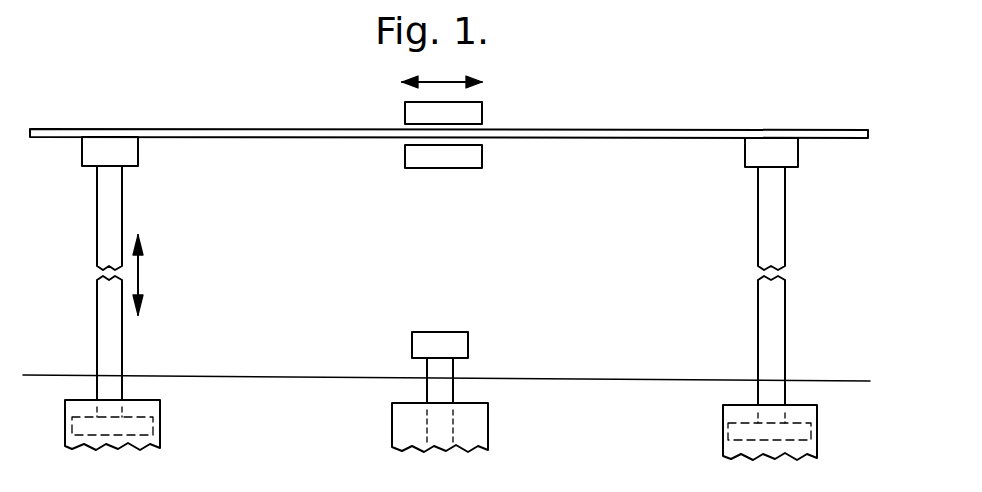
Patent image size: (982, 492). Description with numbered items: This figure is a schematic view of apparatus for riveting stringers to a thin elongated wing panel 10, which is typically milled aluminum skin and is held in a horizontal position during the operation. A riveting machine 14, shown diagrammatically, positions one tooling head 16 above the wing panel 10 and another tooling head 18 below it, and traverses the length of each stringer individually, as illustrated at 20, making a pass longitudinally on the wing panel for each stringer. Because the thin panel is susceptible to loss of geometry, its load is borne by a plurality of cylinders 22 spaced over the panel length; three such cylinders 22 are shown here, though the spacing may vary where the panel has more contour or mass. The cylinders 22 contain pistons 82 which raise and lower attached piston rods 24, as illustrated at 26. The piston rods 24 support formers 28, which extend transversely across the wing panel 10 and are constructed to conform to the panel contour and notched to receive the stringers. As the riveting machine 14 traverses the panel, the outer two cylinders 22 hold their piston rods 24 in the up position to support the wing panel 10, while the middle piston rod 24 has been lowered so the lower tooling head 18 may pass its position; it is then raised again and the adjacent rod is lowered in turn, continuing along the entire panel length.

The wing panel 10 is at (688, 130).
The riveting machine 14 is at (493, 107).
The tooling head 16 is at (405, 110).
The tooling head 18 is at (405, 155).
The traverse of the riveting machine 20 is at (442, 84).
The cylinders 22 is at (160, 410).
The piston rods 24 is at (123, 343).
The raising and lowering of the piston rods 26 is at (142, 275).
The formers 28 is at (138, 152).
The pistons 82 is at (153, 432).